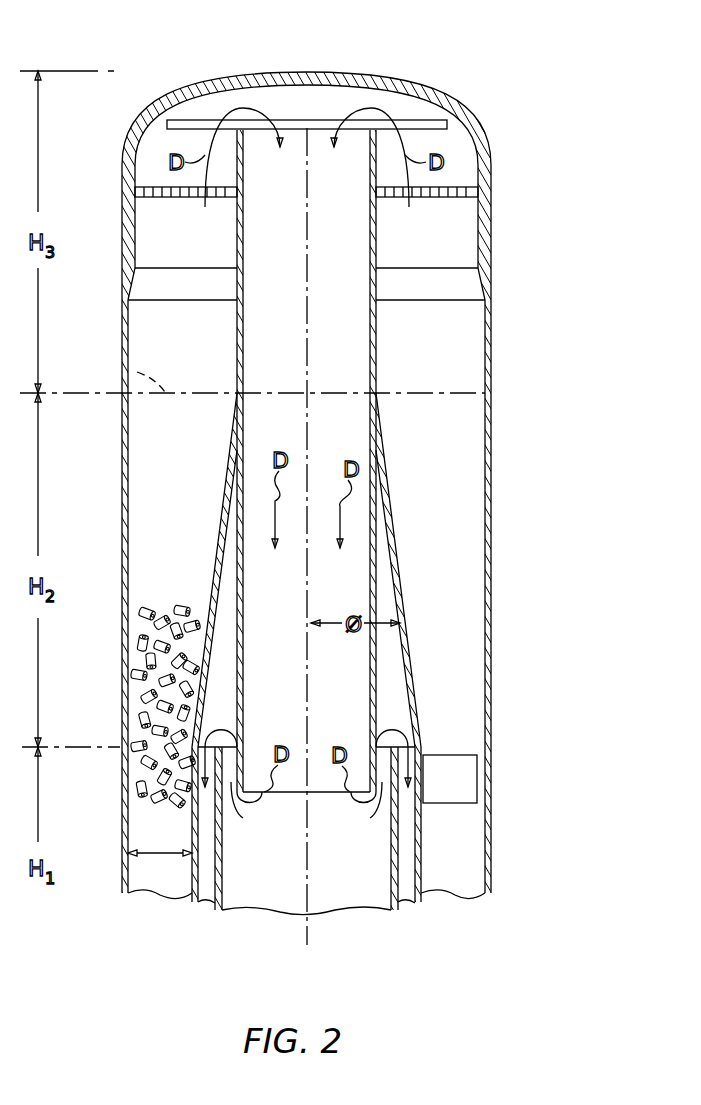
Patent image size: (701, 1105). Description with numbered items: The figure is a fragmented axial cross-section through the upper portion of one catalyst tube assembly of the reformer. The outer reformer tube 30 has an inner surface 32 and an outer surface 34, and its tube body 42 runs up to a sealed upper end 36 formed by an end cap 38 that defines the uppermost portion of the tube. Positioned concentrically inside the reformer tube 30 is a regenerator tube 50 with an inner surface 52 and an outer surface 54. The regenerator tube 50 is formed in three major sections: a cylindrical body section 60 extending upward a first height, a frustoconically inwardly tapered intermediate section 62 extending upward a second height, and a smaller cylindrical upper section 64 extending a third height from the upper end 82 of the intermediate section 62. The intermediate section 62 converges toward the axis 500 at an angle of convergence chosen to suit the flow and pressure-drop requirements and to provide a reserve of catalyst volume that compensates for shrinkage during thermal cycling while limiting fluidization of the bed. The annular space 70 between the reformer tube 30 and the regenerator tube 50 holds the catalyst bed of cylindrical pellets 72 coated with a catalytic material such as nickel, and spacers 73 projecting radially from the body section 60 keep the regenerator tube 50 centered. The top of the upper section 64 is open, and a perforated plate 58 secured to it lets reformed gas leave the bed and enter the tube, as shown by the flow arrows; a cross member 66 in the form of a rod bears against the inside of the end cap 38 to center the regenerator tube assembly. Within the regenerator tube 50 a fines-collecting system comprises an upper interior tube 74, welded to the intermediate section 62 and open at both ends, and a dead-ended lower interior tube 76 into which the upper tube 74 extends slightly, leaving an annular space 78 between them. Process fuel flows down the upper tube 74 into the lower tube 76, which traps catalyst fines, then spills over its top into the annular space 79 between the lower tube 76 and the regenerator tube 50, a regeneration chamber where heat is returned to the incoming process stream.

The outer reformer tube 30 is at (130, 578).
The inner surface 32 is at (130, 350).
The outer surface 34 is at (120, 412).
The sealed upper end 36 is at (306, 88).
The end cap 38 is at (335, 232).
The tube body 42 is at (485, 518).
The regenerator tube 50 is at (463, 814).
The inner surface 52 is at (409, 893).
The outer surface 54 is at (424, 879).
The perforated plate 58 is at (197, 198).
The cylindrical body section 60 is at (190, 870).
The frustoconically inwardly tapered intermediate section 62 is at (402, 587).
The cylindrical upper section 64 is at (370, 152).
The cross member 66 is at (313, 119).
The annular space 70 is at (157, 846).
The cylindrical pellets 72 is at (148, 723).
The spacers 73 is at (467, 797).
The upper interior tube 74 is at (241, 633).
The lower interior tube 76 is at (208, 903).
The annular space 78 is at (229, 790).
The annular space 79 is at (207, 838).
The upper end 82 is at (123, 363).
The axis 500 is at (311, 928).